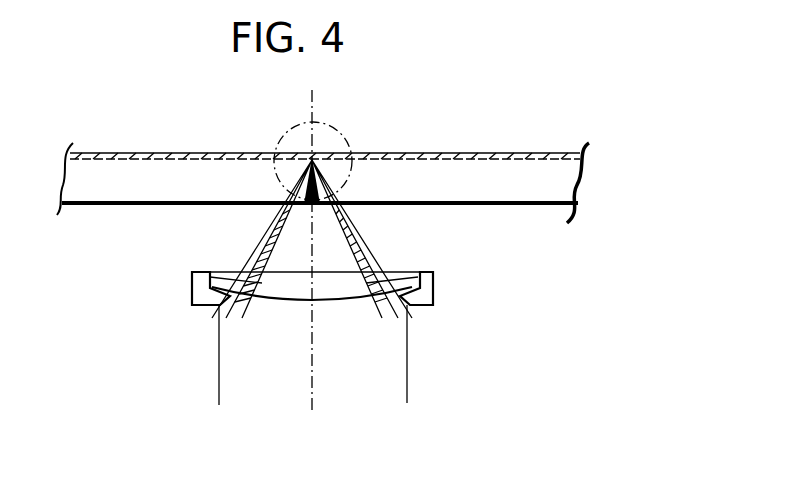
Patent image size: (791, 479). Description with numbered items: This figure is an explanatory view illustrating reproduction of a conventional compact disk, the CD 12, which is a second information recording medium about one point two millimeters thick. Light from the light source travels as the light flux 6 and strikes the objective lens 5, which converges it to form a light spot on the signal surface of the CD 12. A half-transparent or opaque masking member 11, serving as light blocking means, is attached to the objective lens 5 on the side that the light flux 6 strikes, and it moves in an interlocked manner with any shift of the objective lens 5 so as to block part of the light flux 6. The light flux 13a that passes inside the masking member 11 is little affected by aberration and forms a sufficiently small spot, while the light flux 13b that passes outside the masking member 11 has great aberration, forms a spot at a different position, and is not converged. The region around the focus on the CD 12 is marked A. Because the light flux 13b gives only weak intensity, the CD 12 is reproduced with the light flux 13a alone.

The compact disk 12 is at (462, 153).
The focal region A is at (322, 124).
The light flux having passed inside the masking member 13a is at (296, 233).
The light flux having passed outside the masking member 13b is at (395, 238).
The objective lens 5 is at (400, 277).
The masking member 11 is at (250, 305).
The light flux 6 is at (390, 363).